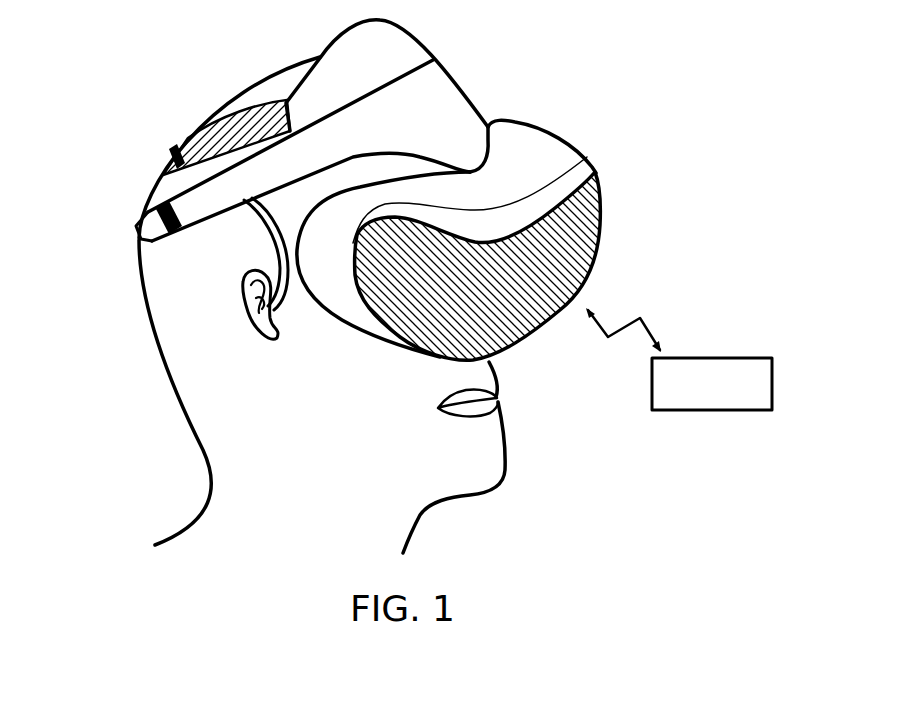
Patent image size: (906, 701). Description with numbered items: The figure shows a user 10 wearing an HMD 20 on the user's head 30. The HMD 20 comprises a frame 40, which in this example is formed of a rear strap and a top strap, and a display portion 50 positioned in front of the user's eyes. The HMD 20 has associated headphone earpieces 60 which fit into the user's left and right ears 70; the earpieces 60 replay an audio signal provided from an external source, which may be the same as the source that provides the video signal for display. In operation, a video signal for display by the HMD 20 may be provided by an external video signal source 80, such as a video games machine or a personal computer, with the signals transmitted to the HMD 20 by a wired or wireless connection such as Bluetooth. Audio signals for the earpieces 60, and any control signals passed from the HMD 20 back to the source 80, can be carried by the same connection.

The user 10 is at (126, 358).
The HMD 20 is at (541, 127).
The user's head 30 is at (136, 283).
The frame 40 is at (183, 212).
The display portion 50 is at (598, 224).
The headphone earpieces 60 is at (283, 302).
The user's ears 70 is at (241, 282).
The external video signal source 80 is at (747, 358).